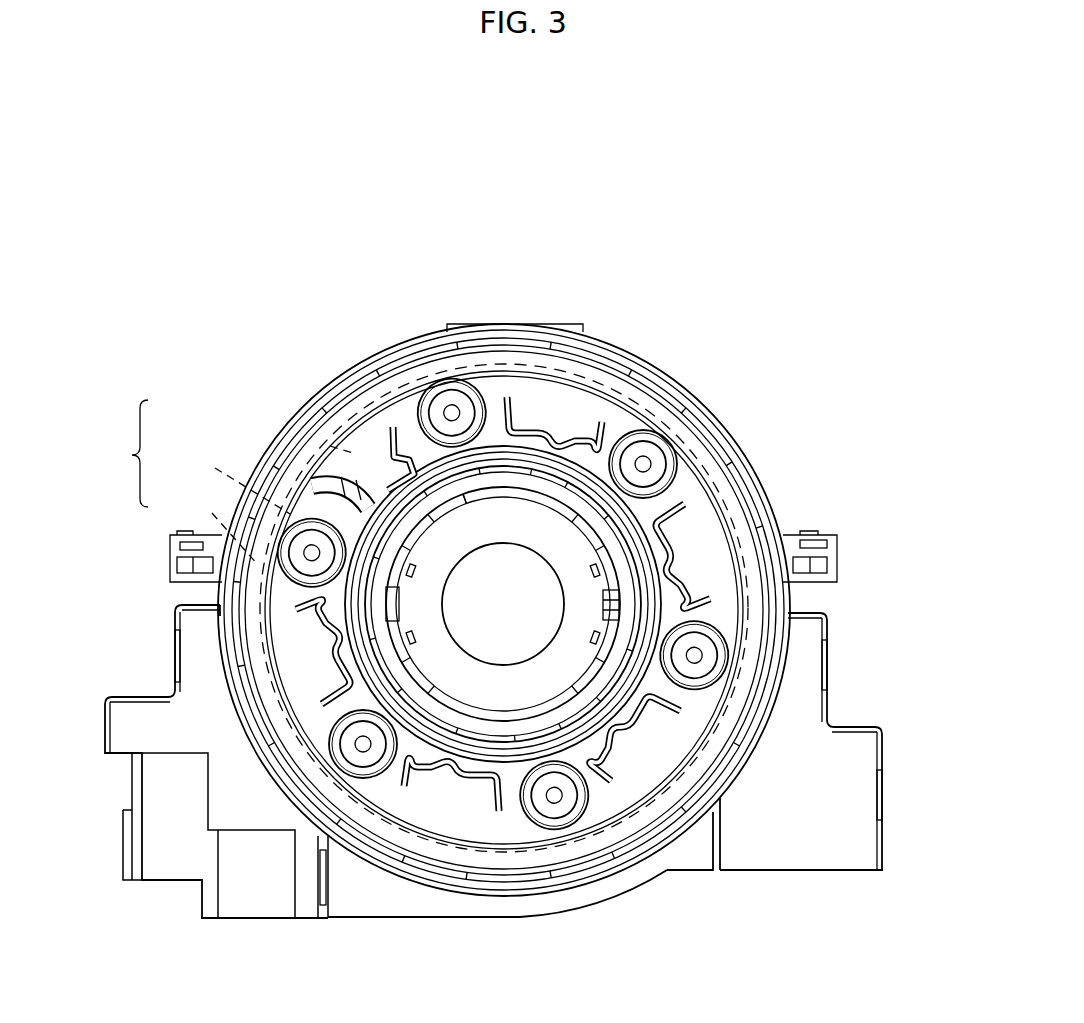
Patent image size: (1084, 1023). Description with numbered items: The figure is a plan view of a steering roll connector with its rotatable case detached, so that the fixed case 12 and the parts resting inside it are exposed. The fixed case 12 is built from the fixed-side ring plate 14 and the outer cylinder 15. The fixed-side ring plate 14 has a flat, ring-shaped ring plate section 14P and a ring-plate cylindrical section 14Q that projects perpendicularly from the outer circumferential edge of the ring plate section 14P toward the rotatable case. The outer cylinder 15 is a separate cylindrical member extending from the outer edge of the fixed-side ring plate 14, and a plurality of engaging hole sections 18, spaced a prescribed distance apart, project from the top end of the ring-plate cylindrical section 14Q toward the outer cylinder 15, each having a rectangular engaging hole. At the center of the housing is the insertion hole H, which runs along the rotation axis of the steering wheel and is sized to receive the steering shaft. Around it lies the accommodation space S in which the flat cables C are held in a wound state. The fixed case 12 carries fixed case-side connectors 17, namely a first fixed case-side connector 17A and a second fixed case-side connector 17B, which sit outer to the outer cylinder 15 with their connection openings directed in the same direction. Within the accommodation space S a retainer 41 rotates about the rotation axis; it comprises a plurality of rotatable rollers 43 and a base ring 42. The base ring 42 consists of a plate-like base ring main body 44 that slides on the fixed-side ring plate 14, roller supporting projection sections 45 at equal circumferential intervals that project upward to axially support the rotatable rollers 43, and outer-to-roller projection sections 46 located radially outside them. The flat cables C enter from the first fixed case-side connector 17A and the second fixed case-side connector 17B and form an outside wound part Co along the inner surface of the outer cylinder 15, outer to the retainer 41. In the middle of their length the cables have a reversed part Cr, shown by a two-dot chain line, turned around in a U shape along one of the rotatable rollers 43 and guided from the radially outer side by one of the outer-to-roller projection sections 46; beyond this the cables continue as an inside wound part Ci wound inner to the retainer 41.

The fixed case 12 is at (279, 413).
The fixed-side ring plate 14 is at (502, 918).
The ring plate section 14P is at (530, 918).
The ring-plate cylindrical section 14Q is at (558, 892).
The outer cylinder 15 is at (214, 615).
The fixed case-side connectors 17 is at (493, 700).
The first fixed case-side connector 17A is at (255, 920).
The second fixed case-side connector 17B is at (778, 873).
The engaging hole sections 18 is at (366, 343).
The retainer 41 is at (487, 186).
The base ring 42 is at (565, 246).
The rotatable rollers 43 is at (620, 432).
The base ring main body 44 is at (403, 397).
The roller supporting projection sections 45 is at (457, 392).
The outer-to-roller projection sections 46 is at (536, 425).
The flat cables C is at (126, 453).
The inside wound part Ci is at (330, 446).
The reversed part Cr is at (215, 468).
The outside wound part Co is at (212, 513).
The insertion hole H is at (495, 613).
The accommodation space S is at (692, 565).